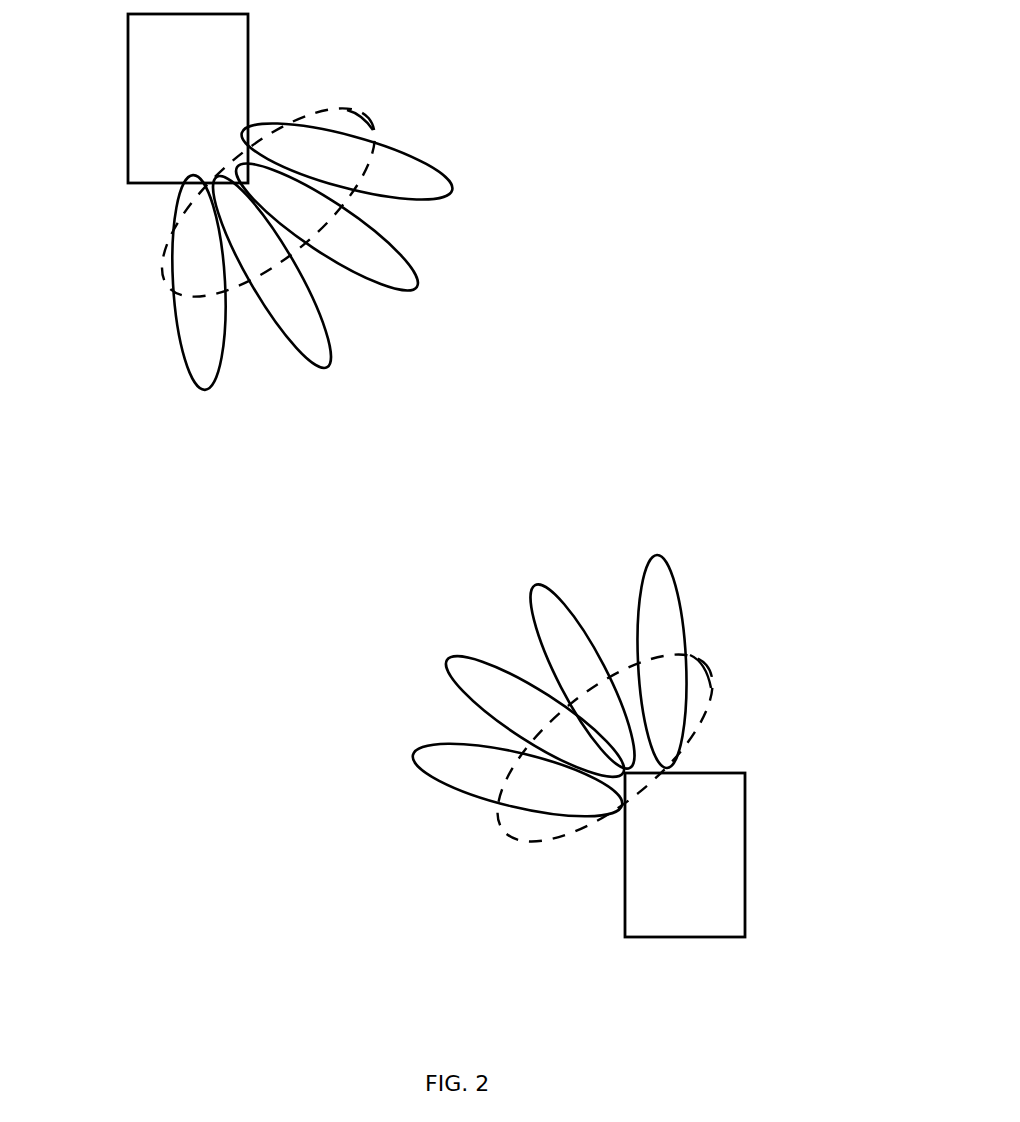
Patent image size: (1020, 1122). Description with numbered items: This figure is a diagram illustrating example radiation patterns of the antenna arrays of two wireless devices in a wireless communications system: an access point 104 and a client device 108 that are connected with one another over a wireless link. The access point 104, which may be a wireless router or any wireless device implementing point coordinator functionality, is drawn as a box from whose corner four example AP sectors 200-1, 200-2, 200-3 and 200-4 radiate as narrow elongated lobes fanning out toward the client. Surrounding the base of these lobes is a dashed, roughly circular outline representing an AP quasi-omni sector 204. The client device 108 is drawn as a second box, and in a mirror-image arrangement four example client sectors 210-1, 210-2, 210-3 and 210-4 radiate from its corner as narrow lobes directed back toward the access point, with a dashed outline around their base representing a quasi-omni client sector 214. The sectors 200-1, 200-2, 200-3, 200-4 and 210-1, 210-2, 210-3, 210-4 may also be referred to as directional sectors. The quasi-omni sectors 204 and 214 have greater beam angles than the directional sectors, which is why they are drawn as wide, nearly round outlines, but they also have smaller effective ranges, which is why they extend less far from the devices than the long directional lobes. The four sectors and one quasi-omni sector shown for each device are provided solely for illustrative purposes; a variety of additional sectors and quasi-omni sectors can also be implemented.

The access point 104 is at (172, 98).
The client device 108 is at (668, 852).
The AP quasi-omni sector 204 is at (348, 109).
The quasi-omni client sector 214 is at (712, 690).
The AP sector 200-1 is at (436, 172).
The AP sector 200-2 is at (406, 268).
The AP sector 200-3 is at (297, 347).
The AP sector 200-4 is at (183, 343).
The client sector 210-1 is at (418, 772).
The client sector 210-2 is at (450, 677).
The client sector 210-3 is at (552, 580).
The client sector 210-4 is at (675, 582).